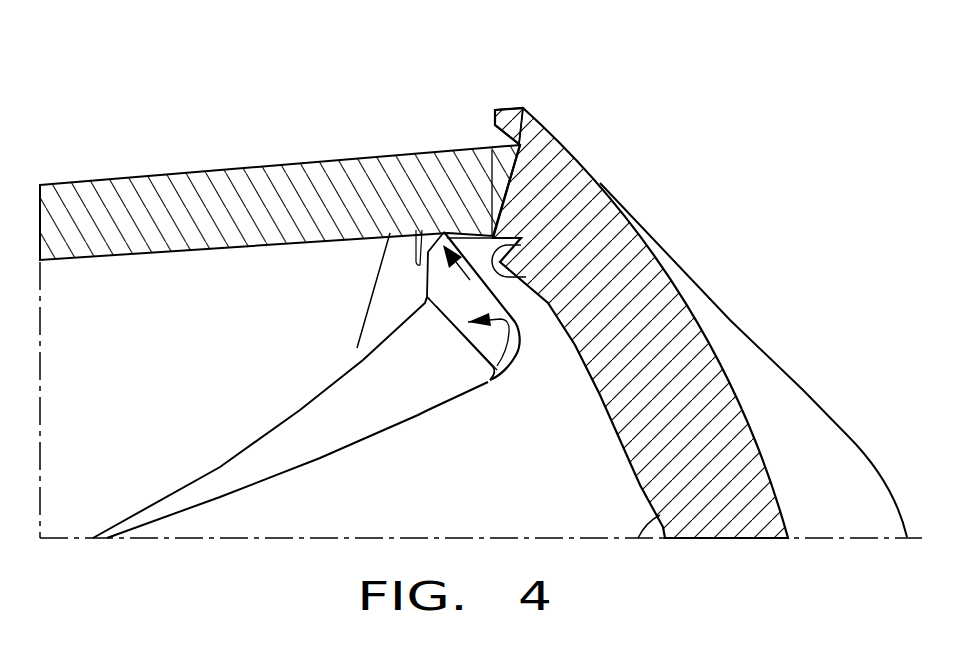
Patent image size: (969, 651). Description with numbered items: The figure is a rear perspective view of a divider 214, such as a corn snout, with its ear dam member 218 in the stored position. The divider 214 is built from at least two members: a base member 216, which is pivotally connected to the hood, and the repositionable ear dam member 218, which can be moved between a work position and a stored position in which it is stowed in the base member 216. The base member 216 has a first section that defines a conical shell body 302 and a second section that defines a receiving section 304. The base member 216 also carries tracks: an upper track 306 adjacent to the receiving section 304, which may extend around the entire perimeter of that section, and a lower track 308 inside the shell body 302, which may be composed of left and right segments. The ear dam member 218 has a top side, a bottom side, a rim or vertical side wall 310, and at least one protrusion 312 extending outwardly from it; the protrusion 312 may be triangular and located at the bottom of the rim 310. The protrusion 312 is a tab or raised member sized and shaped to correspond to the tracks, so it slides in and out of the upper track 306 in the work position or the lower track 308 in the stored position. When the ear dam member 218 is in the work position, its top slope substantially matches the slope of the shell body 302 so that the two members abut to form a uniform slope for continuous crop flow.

The divider 214 is at (670, 92).
The base member 216 is at (745, 352).
The ear dam member 218 is at (328, 432).
The shell body 302 is at (638, 498).
The receiving section 304 is at (265, 152).
The upper track 306 is at (482, 133).
The lower track 308 is at (526, 277).
The rim 310 is at (514, 350).
The protrusion 312 is at (470, 280).